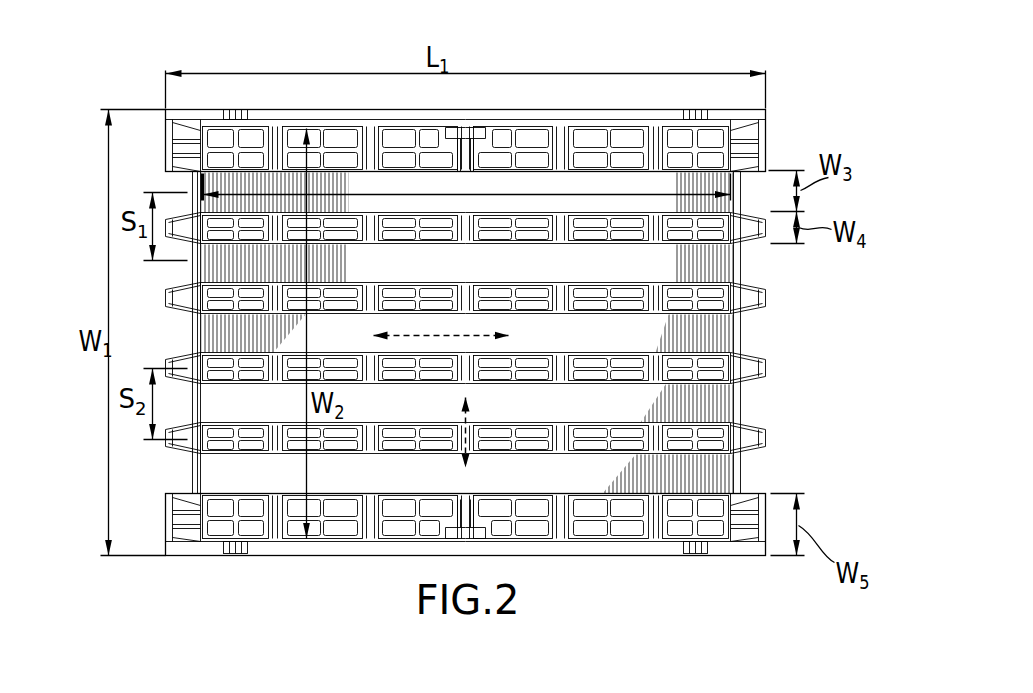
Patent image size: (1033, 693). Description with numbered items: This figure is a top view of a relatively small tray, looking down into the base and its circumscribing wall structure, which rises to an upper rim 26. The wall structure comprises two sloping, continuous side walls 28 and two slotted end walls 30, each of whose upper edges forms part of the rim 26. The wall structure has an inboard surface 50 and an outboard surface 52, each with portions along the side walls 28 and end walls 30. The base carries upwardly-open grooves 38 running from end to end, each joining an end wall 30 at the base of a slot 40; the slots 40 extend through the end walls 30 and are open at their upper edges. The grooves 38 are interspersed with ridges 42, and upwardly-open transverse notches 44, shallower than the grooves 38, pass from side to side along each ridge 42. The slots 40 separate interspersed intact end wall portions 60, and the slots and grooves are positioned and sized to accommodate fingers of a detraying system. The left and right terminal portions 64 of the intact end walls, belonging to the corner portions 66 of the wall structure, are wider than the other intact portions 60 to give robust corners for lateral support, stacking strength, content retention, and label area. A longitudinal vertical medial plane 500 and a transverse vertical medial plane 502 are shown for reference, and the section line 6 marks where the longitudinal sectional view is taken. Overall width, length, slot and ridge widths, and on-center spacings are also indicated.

The section line 6- 6 is at (87, 191).
The upper rim 26 is at (543, 118).
The side walls 28 is at (332, 108).
The end walls 30 is at (157, 309).
The grooves 38 is at (725, 405).
The slots 40 is at (754, 423).
The ridges 42 is at (697, 362).
The transverse notches 44 is at (655, 289).
The inboard surface 50 is at (558, 541).
The outboard surface 52 is at (290, 557).
The intact end wall portions 60 is at (762, 298).
The terminal portions 64 is at (763, 147).
The corner portions 66 is at (752, 545).
The longitudinal vertical medial plane 500 is at (450, 332).
The transverse vertical medial plane 502 is at (478, 437).